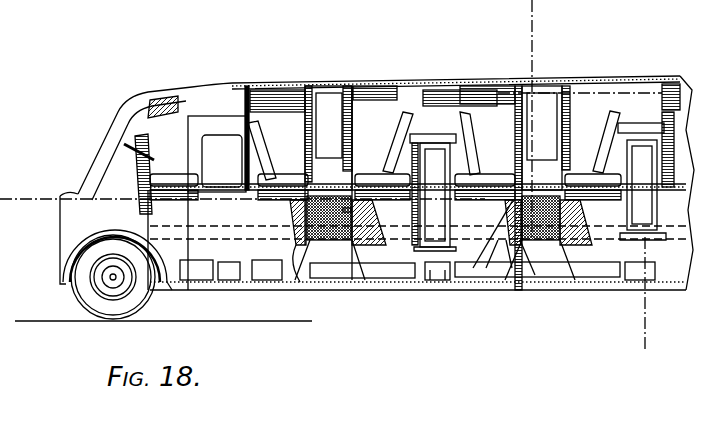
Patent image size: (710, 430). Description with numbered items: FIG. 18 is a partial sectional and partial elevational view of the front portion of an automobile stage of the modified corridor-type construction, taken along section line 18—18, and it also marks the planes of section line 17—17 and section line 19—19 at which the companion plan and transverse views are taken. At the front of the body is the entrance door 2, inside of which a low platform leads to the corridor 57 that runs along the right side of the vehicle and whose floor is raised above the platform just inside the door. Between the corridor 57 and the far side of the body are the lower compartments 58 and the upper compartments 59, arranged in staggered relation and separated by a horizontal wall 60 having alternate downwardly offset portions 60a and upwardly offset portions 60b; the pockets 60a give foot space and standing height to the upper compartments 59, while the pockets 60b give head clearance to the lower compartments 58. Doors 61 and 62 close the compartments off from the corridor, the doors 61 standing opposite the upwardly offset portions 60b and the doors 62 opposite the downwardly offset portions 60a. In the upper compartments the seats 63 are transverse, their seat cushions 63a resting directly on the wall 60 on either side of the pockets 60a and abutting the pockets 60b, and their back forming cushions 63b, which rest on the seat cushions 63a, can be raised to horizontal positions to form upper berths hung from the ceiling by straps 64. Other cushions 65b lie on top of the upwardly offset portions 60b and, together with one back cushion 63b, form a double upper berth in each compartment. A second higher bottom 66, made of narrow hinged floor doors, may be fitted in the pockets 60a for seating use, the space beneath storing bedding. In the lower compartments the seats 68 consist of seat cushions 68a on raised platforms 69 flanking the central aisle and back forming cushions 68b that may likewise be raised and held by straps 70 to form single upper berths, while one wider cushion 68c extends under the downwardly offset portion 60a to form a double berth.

The entrance door 2 is at (225, 110).
The section line 17— 17 is at (22, 168).
The section line 18— 18 is at (37, 0).
The section line 19— 19 is at (570, 29).
The corridor 57 is at (275, 254).
The lower compartments 58 is at (400, 242).
The upper compartments 59 is at (505, 100).
The horizontal wall 60 is at (286, 178).
The downwardly offset portions 60a is at (341, 232).
The upwardly offset portions 60b is at (436, 145).
The doors 61 is at (442, 165).
The doors 62 is at (327, 93).
The seats 63 is at (403, 135).
The seat cushions 63a is at (371, 178).
The back forming cushions 63b is at (413, 170).
The straps 64 is at (306, 92).
The table top 65b is at (441, 135).
The second higher bottom 66 is at (332, 206).
The seats 68 is at (503, 262).
The seat cushions 68a is at (476, 268).
The back forming cushions 68b is at (538, 272).
The wider seat cushion 68c is at (358, 268).
The raised platforms 69 is at (462, 283).
The straps 70 is at (481, 186).